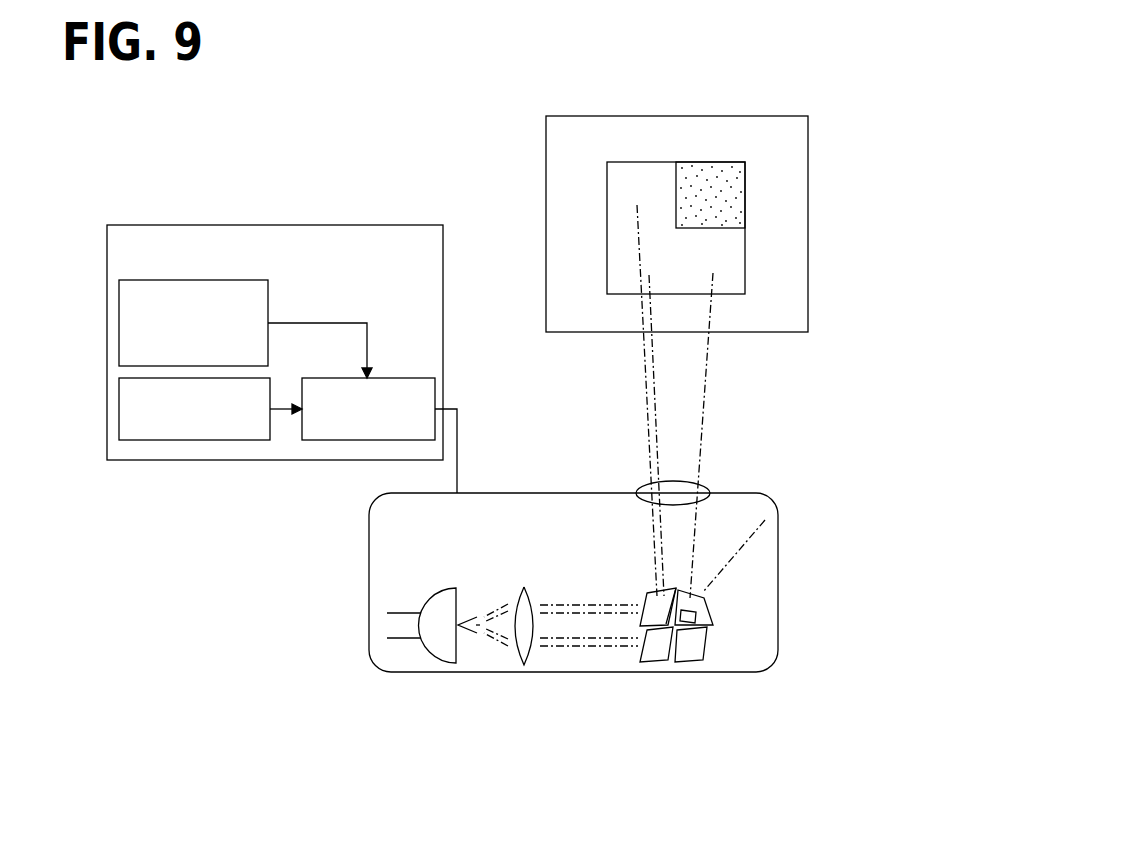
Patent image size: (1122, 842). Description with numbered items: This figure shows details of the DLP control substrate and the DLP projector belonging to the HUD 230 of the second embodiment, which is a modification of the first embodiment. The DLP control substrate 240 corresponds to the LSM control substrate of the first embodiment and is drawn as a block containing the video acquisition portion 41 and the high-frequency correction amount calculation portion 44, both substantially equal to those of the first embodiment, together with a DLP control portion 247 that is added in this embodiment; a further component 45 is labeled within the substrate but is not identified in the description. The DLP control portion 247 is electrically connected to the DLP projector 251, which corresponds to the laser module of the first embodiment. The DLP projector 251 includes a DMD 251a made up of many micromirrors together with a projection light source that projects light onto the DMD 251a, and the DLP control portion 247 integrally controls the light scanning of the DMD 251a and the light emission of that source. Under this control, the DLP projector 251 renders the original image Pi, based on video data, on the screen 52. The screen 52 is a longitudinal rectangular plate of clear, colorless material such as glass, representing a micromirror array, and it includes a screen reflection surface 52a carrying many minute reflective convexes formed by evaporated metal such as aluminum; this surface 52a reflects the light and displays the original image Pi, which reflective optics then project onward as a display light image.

The HUD 230 is at (222, 148).
The DLP control substrate 240 is at (404, 225).
The control unit 45 is at (420, 299).
The high-frequency correction amount calculation portion 44 is at (123, 278).
The video acquisition portion 41 is at (188, 440).
The DLP control portion 247 is at (322, 440).
The DLP projector 251 is at (778, 548).
The DMD 251a is at (424, 651).
The screen 52 is at (808, 162).
The screen reflection surface 52a is at (778, 215).
The original image Pi is at (760, 249).